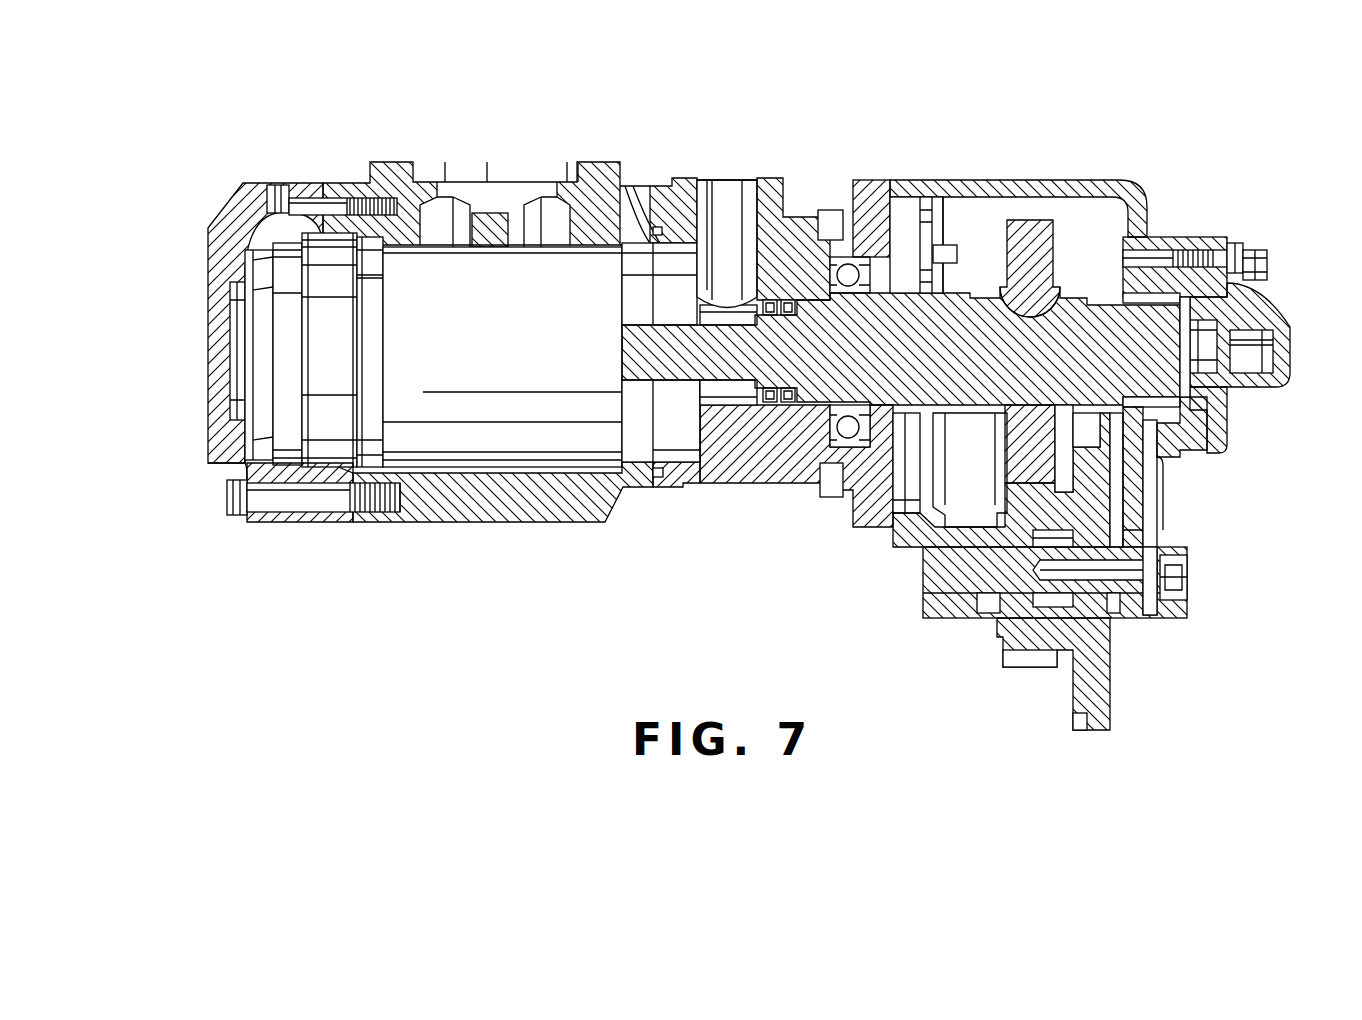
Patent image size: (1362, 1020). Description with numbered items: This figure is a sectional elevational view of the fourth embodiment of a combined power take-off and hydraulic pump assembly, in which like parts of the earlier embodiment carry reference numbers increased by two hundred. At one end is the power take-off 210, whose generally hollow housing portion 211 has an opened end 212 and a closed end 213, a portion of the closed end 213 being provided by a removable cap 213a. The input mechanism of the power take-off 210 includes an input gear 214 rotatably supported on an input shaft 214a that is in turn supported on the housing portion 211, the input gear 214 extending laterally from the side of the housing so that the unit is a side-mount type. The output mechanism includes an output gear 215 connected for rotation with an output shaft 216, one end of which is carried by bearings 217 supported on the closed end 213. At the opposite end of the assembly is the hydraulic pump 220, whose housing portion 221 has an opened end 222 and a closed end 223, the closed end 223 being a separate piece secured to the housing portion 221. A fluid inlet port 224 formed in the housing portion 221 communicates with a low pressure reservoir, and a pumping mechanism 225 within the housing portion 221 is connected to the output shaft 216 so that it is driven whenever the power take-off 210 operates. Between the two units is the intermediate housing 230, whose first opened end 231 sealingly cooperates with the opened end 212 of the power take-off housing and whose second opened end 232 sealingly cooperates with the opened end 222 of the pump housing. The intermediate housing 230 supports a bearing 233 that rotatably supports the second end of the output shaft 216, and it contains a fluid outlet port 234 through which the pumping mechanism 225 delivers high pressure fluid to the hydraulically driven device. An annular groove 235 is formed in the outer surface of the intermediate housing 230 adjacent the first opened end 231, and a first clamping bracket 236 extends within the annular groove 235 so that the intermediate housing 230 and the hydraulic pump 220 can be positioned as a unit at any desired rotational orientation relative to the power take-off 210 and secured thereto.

The power take-off 210 is at (1165, 650).
The housing portion 211 is at (988, 180).
The opened end 212 is at (865, 178).
The closed end 213 is at (1157, 280).
The removable cap 213a is at (1218, 428).
The input gear 214 is at (1097, 693).
The input shaft 214a is at (950, 567).
The output gear 215 is at (1033, 222).
The output shaft 216 is at (987, 313).
The bearings 217 is at (1150, 400).
The hydraulic pump 220 is at (268, 583).
The housing portion 221 is at (473, 507).
The opened end 222 is at (686, 490).
The closed end 223 is at (223, 452).
The fluid inlet port 224 is at (420, 177).
The pumping mechanism 225 is at (480, 341).
The intermediate housing 230 is at (737, 540).
The first opened end 231 is at (910, 222).
The second opened end 232 is at (656, 228).
The bearing 233 is at (845, 425).
The fluid outlet port 234 is at (700, 205).
The annular groove 235 is at (817, 212).
The first clamping bracket 236 is at (832, 210).